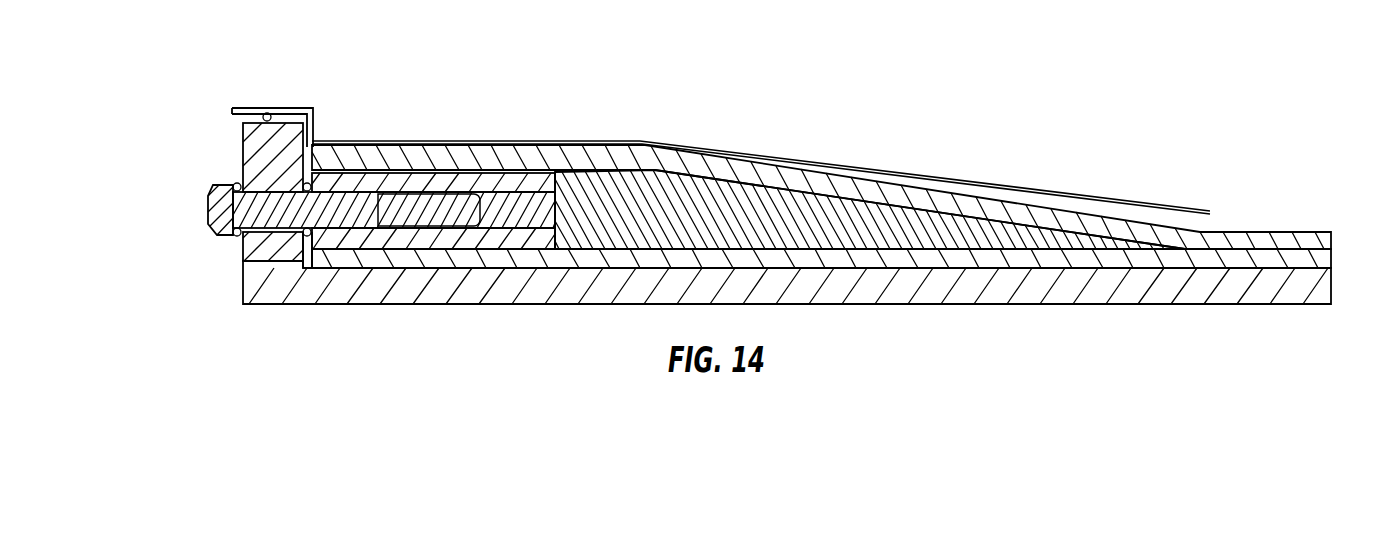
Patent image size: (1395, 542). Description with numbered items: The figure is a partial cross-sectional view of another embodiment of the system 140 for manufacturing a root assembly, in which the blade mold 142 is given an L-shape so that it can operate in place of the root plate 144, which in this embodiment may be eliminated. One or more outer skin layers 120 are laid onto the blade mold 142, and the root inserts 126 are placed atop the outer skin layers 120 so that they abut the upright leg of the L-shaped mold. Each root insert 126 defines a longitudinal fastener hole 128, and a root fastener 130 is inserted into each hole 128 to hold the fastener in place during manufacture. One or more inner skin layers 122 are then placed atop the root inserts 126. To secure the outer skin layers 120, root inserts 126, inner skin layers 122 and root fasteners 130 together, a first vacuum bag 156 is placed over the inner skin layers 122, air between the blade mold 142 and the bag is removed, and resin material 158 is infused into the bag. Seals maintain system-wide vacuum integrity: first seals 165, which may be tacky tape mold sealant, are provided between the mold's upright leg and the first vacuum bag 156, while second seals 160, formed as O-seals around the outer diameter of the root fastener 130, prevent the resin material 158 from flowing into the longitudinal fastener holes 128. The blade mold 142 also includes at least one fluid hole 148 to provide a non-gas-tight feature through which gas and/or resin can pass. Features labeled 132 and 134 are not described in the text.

The system 140 is at (136, 130).
The outer skin layers 120 is at (927, 258).
The inner skin layers 122 is at (893, 192).
The root inserts 126 is at (517, 189).
The longitudinal fastener holes 128 is at (440, 229).
The root fastener 130 is at (378, 207).
The gap 132 is at (322, 178).
The core wedge 134 is at (918, 220).
The blade mold 142 is at (1237, 305).
The root plate 144 is at (251, 171).
The fluid hole 148 is at (277, 258).
The first vacuum bag 156 is at (868, 170).
The resin material 158 is at (1210, 221).
The second seals 160 is at (229, 194).
The first seals 165 is at (269, 113).